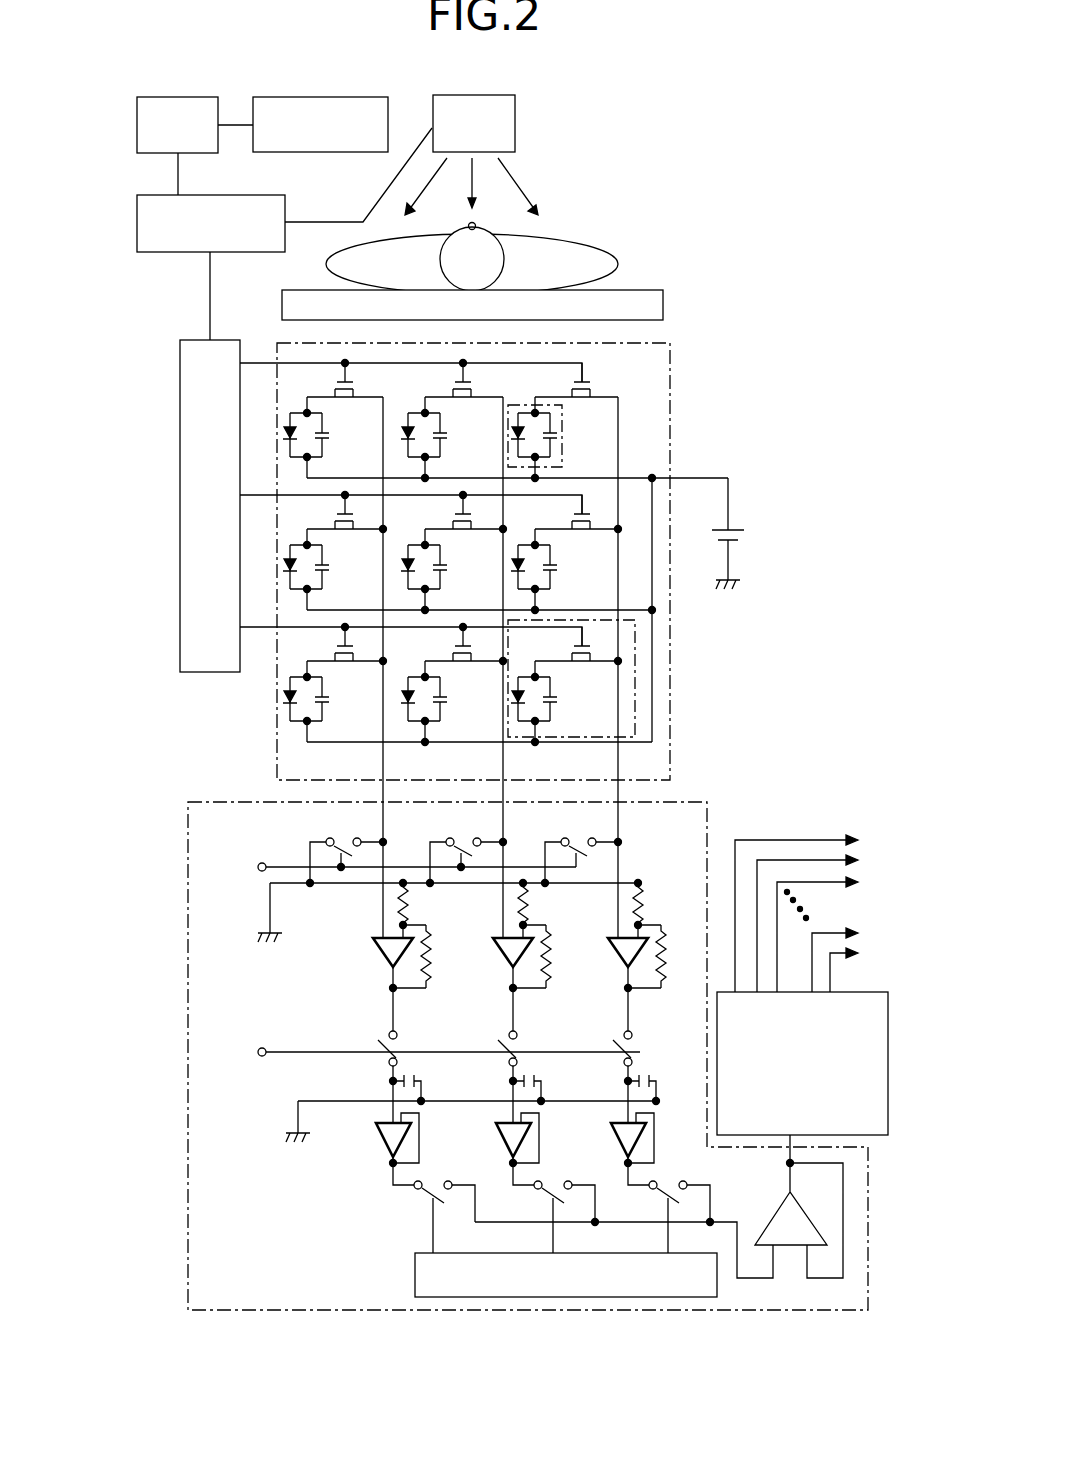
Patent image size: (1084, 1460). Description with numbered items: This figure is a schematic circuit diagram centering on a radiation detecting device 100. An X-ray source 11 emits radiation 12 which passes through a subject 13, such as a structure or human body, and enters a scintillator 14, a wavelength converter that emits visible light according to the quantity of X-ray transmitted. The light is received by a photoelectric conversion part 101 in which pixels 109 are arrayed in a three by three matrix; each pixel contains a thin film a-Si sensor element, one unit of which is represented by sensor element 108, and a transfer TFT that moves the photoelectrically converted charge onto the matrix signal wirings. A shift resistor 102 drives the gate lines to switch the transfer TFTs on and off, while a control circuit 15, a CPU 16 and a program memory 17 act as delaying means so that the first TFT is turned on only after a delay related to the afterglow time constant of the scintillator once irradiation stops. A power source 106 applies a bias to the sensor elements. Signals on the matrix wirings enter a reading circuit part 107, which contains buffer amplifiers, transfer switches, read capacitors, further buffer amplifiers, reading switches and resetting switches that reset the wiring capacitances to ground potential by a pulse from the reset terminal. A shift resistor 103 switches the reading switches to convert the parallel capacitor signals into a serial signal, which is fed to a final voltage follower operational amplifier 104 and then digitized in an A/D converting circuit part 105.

The X-ray source 11 is at (517, 135).
The radiation 12 is at (520, 190).
The subject 13 is at (605, 252).
The scintillator 14 is at (663, 300).
The control circuit 15 is at (137, 223).
The CPU 16 is at (137, 125).
The program memory 17 is at (300, 97).
The radiation detecting device 100 is at (172, 311).
The photoelectric conversion part 101 is at (501, 559).
The shift resistor (SR1) 102 is at (207, 675).
The shift resistor (SR2) 103 is at (415, 1268).
The operational amplifier 104 is at (775, 1213).
The A/D converting circuit part 105 is at (888, 1040).
The power source 106 is at (745, 535).
The reading circuit part 107 is at (528, 853).
The sensor element 108 is at (562, 440).
The pixel 109 is at (635, 672).